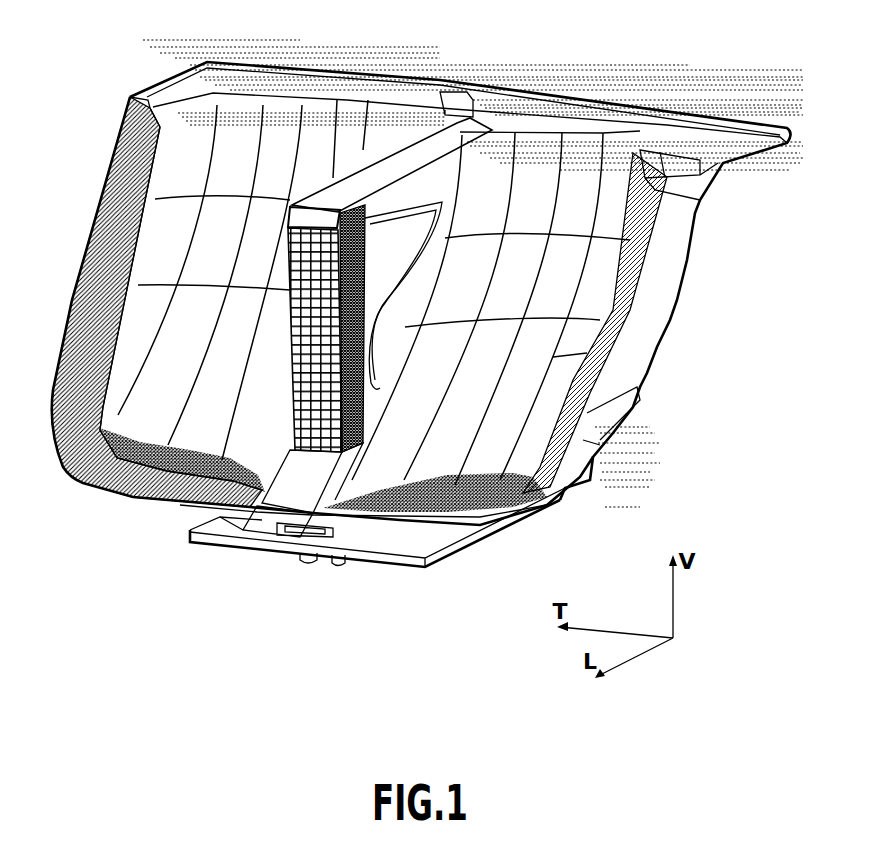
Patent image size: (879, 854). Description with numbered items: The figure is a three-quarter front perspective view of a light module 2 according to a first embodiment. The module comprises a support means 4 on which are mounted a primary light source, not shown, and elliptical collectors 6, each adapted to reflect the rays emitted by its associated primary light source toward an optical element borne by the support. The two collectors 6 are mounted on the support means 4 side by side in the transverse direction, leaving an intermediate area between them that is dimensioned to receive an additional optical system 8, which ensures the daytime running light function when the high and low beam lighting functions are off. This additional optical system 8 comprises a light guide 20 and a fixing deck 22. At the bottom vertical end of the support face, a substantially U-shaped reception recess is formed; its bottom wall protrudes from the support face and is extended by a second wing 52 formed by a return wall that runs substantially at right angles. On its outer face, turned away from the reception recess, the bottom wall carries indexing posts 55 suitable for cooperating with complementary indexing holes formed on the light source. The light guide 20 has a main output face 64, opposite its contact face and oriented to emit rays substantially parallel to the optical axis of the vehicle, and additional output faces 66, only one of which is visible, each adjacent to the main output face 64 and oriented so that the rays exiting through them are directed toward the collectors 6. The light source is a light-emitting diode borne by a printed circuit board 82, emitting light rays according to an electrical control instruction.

The light module 2 is at (224, 605).
The support means 4 is at (717, 160).
The elliptical collector 6 is at (167, 437).
The additional optical system 8 is at (426, 179).
The light guide 20 is at (279, 380).
The fixing deck 22 is at (390, 155).
The second wing 52 is at (303, 490).
The indexing posts 55 is at (308, 564).
The main output face 64 is at (301, 265).
The additional output face 66 is at (350, 312).
The printed circuit board 82 is at (423, 547).